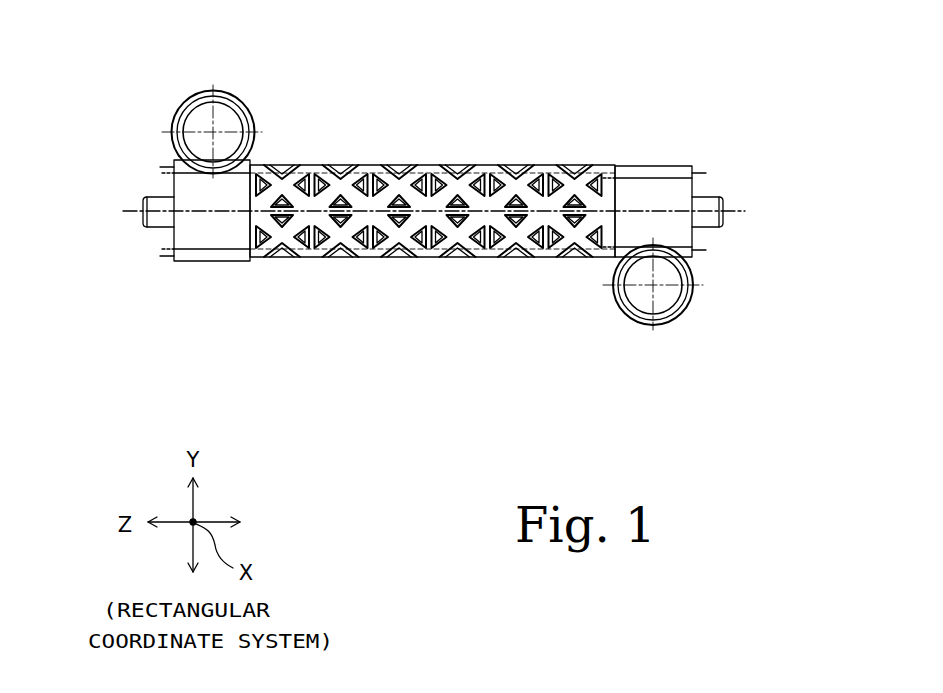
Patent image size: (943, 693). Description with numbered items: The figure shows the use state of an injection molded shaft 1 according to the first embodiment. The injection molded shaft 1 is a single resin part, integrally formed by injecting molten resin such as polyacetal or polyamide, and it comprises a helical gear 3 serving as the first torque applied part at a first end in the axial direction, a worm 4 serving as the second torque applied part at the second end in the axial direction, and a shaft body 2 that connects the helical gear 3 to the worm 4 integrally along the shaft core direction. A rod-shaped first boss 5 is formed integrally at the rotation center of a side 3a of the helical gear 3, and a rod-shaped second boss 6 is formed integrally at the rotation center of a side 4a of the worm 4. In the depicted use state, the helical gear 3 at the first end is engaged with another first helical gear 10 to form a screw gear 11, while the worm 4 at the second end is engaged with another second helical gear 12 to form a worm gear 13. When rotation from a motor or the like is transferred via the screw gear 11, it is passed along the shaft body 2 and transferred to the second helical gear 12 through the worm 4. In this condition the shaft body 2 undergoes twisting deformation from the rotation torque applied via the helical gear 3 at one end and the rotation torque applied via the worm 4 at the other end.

The injection molded shaft 1 is at (617, 150).
The shaft body 2 is at (426, 166).
The helical gear 3 is at (185, 188).
The side of the helical gear 3a is at (185, 243).
The worm 4 is at (677, 237).
The side of the worm 4a is at (693, 178).
The first boss 5 is at (142, 197).
The second boss 6 is at (708, 197).
The first helical gear 10 is at (202, 122).
The screw gear 11 is at (168, 55).
The second helical gear 12 is at (668, 295).
The worm gear 13 is at (776, 243).